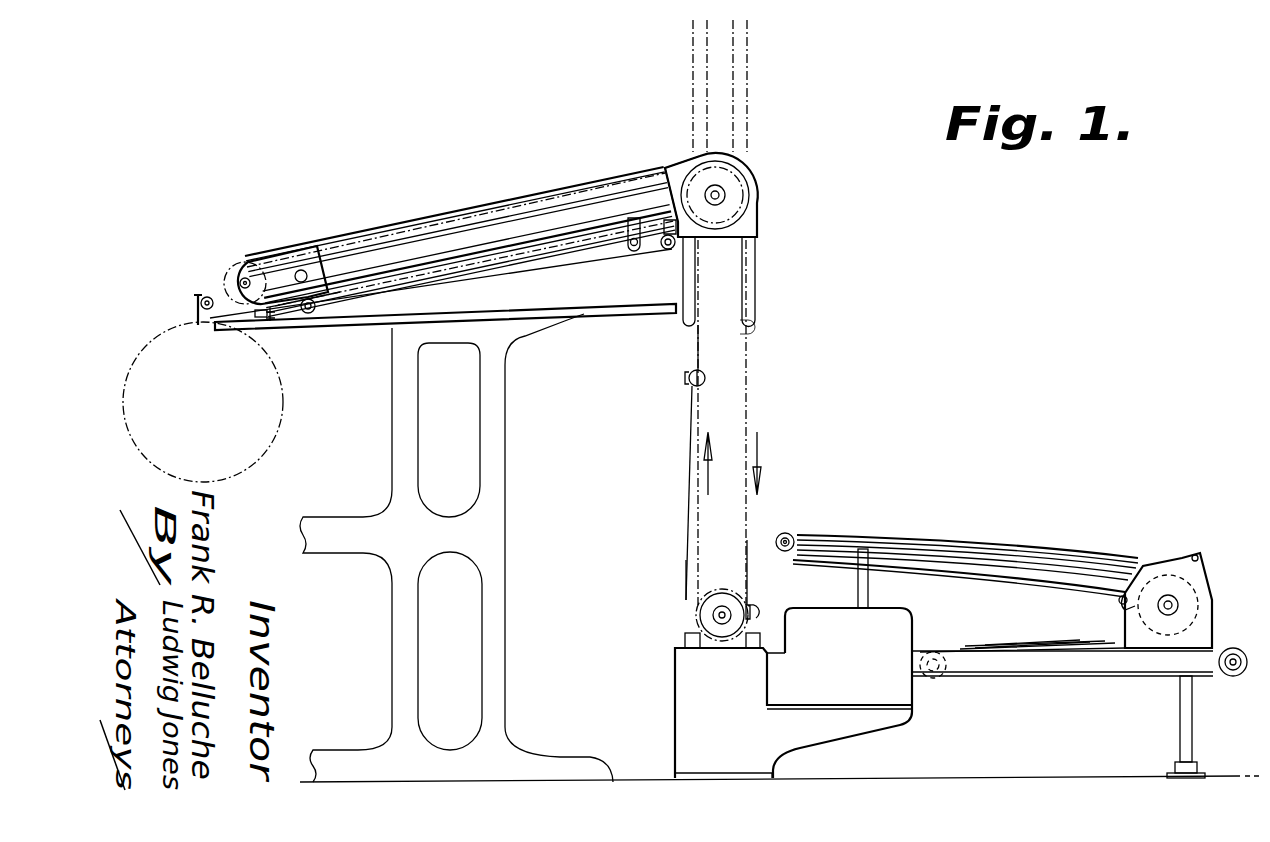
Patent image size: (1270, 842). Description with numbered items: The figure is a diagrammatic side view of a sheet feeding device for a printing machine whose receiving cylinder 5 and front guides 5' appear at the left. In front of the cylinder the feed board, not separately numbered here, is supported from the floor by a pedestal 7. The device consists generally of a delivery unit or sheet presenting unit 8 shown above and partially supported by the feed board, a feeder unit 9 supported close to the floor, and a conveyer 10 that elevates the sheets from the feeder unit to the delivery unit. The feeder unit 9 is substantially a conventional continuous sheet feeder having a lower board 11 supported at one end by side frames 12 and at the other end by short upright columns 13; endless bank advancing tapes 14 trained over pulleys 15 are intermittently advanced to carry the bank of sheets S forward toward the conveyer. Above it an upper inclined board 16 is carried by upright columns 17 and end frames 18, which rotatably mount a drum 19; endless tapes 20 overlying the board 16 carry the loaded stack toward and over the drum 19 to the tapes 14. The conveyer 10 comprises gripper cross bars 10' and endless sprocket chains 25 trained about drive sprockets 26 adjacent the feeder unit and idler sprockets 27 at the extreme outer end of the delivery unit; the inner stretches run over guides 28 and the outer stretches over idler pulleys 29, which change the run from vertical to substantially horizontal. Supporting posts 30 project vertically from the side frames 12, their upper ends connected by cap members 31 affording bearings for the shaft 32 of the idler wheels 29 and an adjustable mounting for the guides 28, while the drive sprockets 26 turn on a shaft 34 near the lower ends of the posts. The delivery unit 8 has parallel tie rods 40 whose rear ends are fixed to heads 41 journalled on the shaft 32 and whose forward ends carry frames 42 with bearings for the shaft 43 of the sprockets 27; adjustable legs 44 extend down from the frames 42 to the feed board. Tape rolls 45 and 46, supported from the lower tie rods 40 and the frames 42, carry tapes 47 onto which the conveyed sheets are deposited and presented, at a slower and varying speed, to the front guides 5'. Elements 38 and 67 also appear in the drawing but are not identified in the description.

The receiving cylinder 5 is at (228, 402).
The front guides 5' is at (167, 310).
The pedestal 7 is at (507, 502).
The delivery unit 8 is at (444, 256).
The feeder unit 9 is at (1011, 623).
The conveyer 10 is at (744, 312).
The gripper bars 10' is at (705, 443).
The lower board 11 is at (965, 644).
The side frames 12 is at (848, 720).
The short upright columns 13 is at (1178, 716).
The endless bank advancing tapes 14 is at (1004, 681).
The pulleys 15 is at (932, 678).
The upper inclined board 16 is at (839, 524).
The upright columns 17 is at (858, 582).
The end frames 18 is at (1200, 600).
The drum 19 is at (1178, 580).
The endless tapes 20 is at (922, 566).
The endless sprocket chains 25 is at (696, 562).
The drive sprockets 26 is at (732, 574).
The idler sprockets 27 is at (240, 264).
The guides 28 is at (660, 238).
The idler pulleys 29 is at (726, 184).
The supporting posts 30 is at (745, 300).
The cap members 31 is at (747, 222).
The shaft 32 is at (726, 193).
The shaft 34 is at (724, 634).
The rails 38 is at (532, 176).
The tie rods 40 is at (465, 228).
The heads 41 is at (698, 162).
The frames 42 is at (315, 243).
The shaft 43 is at (207, 296).
The adjustable legs 44 is at (280, 316).
The tape roll 45 is at (312, 301).
The tape roll 46 is at (630, 244).
The tapes 47 is at (434, 286).
The beam 67 is at (548, 288).
The bank of sheets S is at (1060, 638).